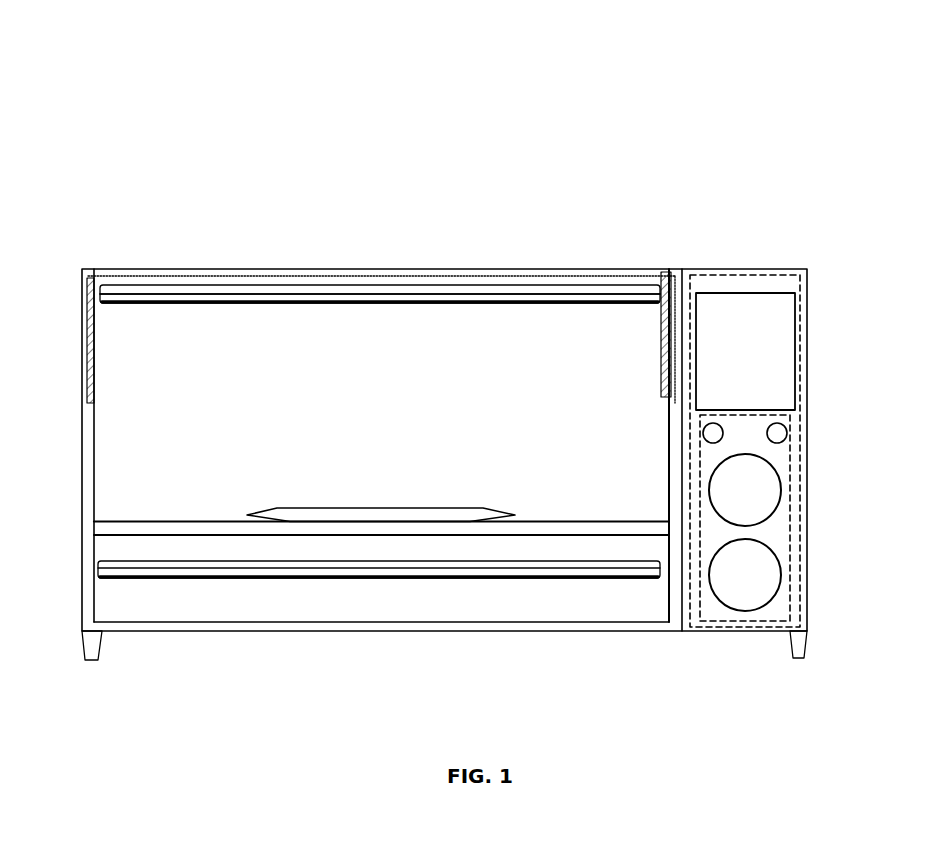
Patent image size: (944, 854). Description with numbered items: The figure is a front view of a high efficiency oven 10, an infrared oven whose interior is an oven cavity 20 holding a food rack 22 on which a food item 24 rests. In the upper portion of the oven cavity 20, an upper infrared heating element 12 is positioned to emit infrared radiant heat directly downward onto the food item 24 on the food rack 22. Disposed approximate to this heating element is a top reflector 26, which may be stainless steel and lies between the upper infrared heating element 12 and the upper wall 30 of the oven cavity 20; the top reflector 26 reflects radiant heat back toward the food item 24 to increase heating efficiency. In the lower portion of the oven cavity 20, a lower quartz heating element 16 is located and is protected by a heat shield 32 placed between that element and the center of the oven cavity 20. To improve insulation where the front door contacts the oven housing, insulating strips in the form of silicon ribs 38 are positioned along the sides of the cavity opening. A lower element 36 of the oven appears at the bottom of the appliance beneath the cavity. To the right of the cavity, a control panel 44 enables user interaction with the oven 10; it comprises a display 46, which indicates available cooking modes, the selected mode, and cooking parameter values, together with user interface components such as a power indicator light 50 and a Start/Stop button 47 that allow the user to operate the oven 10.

The high efficiency oven 10 is at (767, 90).
The upper infrared heating element 12 is at (147, 298).
The lower quartz heating element 16 is at (113, 578).
The oven cavity 20 is at (381, 449).
The food rack 22 is at (147, 521).
The food item 24 is at (372, 508).
The top reflector 26 is at (177, 303).
The upper wall 30 is at (120, 277).
The heat shield 32 is at (145, 580).
The bottom wall 36 is at (165, 624).
The silicon rib 38 is at (88, 323).
The control panel 44 is at (803, 283).
The display 46 is at (797, 342).
The Start/Stop button 47 is at (788, 432).
The power indicator light 50 is at (723, 428).